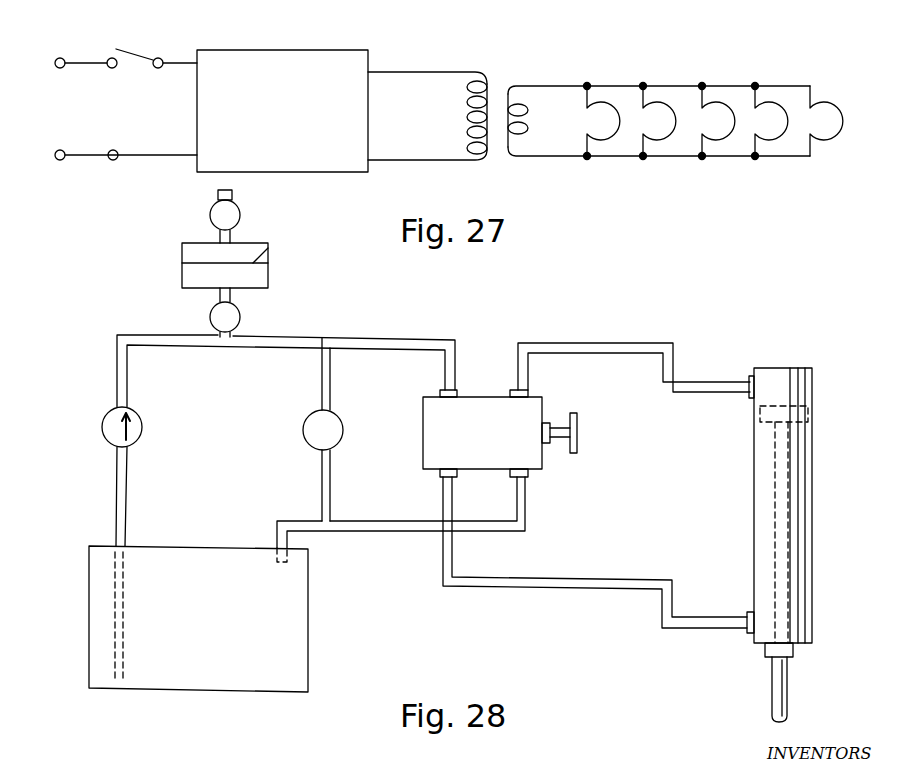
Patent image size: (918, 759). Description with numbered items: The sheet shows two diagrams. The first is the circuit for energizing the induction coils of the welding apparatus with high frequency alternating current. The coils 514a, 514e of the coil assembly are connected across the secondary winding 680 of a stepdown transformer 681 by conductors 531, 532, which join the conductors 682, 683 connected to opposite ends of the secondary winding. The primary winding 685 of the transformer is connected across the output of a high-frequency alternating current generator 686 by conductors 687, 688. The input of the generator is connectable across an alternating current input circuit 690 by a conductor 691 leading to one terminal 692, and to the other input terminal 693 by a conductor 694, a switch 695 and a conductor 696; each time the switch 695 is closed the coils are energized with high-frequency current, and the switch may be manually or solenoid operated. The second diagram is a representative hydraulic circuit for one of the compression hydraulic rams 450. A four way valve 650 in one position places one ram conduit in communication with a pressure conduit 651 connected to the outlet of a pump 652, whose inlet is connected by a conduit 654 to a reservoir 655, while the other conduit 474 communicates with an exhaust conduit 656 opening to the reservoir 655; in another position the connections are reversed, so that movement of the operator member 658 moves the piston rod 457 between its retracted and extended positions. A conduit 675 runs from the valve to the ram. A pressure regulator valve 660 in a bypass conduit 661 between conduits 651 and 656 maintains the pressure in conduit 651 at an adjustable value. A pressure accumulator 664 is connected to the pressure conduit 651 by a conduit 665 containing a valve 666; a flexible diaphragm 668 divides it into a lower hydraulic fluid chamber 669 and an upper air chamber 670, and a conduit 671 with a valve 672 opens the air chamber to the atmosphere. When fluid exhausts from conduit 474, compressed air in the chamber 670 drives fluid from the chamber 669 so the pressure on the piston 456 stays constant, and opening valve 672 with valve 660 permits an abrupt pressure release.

In FIG. 27, the alternating current input circuit 690 is at (72, 120).
In FIG. 27, the input terminal 693 is at (54, 63).
In FIG. 27, the conductor 696 is at (75, 58).
In FIG. 27, the switch 695 is at (140, 36).
In FIG. 27, the conductor 694 is at (182, 58).
In FIG. 27, the high-frequency alternating current generator 686 is at (290, 53).
In FIG. 27, the conductor 687 is at (397, 67).
In FIG. 27, the conductor 688 is at (418, 145).
In FIG. 27, the primary winding 685 is at (468, 117).
In FIG. 27, the stepdown transformer 681 is at (509, 70).
In FIG. 27, the conductor 531 is at (585, 95).
In FIG. 27, the conductor 532 is at (585, 147).
In FIG. 27, the secondary winding 680 is at (527, 128).
In FIG. 27, the conductor 682 is at (622, 86).
In FIG. 27, the conductor 683 is at (670, 157).
In FIG. 27, the coil 514a is at (612, 155).
In FIG. 27, the coil 514e is at (830, 148).
In FIG. 27, the terminal 692 is at (62, 161).
In FIG. 27, the conductor 691 is at (118, 160).
In FIG. 28, the valve 672 is at (211, 216).
In FIG. 28, the conduit 671 is at (232, 237).
In FIG. 28, the air chamber 670 is at (182, 249).
In FIG. 28, the flexible diaphragm 668 is at (270, 247).
In FIG. 28, the pressure accumulator 664 is at (268, 275).
In FIG. 28, the hydraulic fluid chamber 669 is at (196, 273).
In FIG. 28, the conduit 665 is at (232, 300).
In FIG. 28, the valve 666 is at (212, 313).
In FIG. 28, the pressure conduit 651 is at (386, 330).
In FIG. 28, the pump 652 is at (141, 428).
In FIG. 28, the conduit 654 is at (126, 508).
In FIG. 28, the bypass conduit 661 is at (327, 392).
In FIG. 28, the pressure regulator valve 660 is at (333, 434).
In FIG. 28, the exhaust conduit 656 is at (527, 526).
In FIG. 28, the four way valve 650 is at (483, 400).
In FIG. 28, the operator member 658 is at (577, 434).
In FIG. 28, the conduit 474 is at (728, 600).
In FIG. 28, the conduit 675 is at (719, 383).
In FIG. 28, the compression hydraulic ram 450 is at (800, 352).
In FIG. 28, the piston 456 is at (760, 413).
In FIG. 28, the piston rod 457 is at (783, 692).
In FIG. 28, the reservoir 655 is at (308, 621).